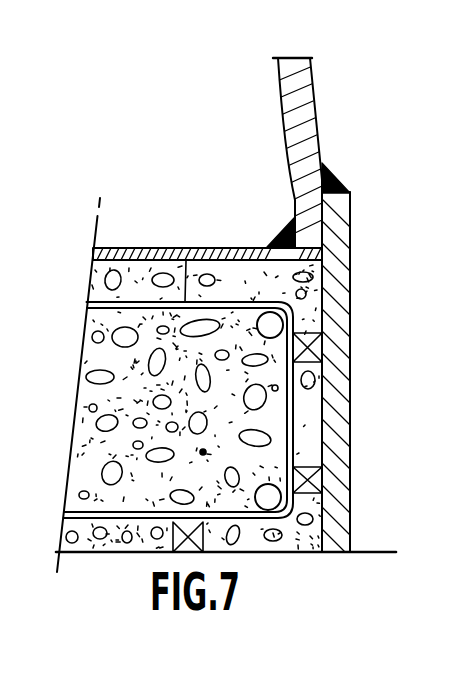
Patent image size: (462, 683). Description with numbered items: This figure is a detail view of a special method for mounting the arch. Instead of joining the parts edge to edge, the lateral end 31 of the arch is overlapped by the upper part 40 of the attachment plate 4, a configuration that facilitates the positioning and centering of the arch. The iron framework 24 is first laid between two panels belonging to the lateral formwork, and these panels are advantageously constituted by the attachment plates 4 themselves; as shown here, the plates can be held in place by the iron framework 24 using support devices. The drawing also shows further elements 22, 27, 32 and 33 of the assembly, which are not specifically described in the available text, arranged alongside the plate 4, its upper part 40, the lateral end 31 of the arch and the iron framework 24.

The attachment plate 4 is at (333, 413).
The hatched cover plate 22 is at (222, 248).
The iron framework 24 is at (188, 248).
The anchor 27 is at (318, 478).
The lateral end of the arch 31 is at (308, 167).
The refractory layer 32 is at (135, 247).
The curved plate 33 is at (330, 88).
The upper part of the plate 40 is at (352, 222).